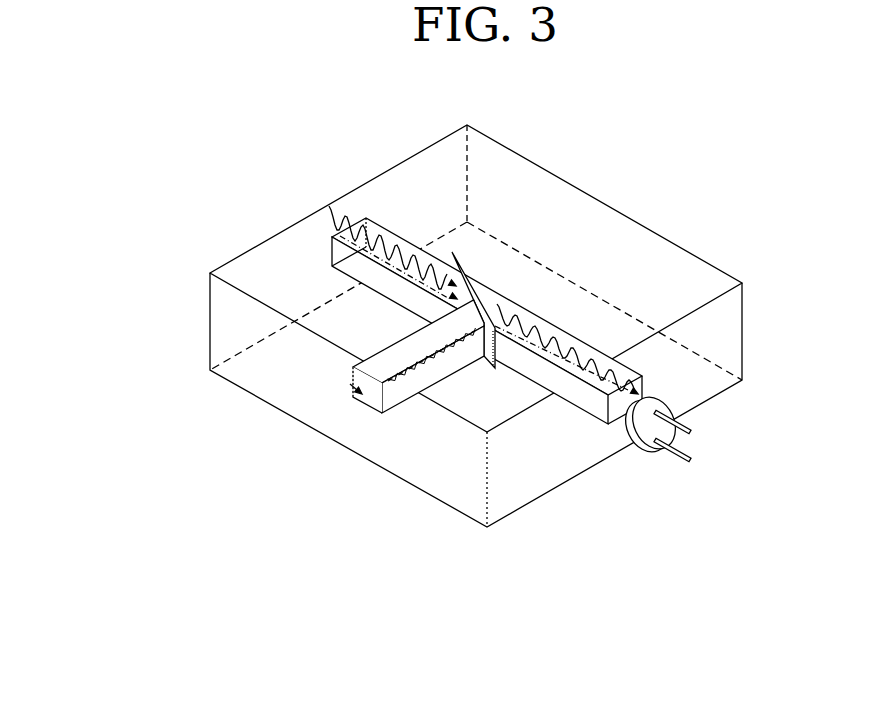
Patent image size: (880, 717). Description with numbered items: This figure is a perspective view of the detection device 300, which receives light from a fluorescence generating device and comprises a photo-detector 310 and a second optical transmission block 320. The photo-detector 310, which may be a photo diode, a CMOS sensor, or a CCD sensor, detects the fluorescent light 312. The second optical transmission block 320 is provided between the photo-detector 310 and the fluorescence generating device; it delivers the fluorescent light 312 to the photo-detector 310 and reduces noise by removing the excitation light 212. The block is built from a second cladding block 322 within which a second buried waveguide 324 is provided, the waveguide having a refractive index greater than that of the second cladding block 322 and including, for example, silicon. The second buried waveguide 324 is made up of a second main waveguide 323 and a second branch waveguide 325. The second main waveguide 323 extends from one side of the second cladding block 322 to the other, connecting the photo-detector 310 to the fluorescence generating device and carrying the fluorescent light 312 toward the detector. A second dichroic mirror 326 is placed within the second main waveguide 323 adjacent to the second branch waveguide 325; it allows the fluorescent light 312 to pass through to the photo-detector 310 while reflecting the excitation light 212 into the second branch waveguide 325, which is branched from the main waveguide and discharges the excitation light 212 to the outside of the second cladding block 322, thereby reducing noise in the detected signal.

The detection device 300 is at (719, 177).
The photo-detector 310 is at (633, 443).
The fluorescent light 312 is at (565, 338).
The second optical transmission block 320 is at (441, 625).
The second cladding block 322 is at (508, 502).
The second main waveguide 323 is at (513, 367).
The second buried waveguide 324 is at (441, 562).
The second branch waveguide 325 is at (422, 380).
The second dichroic mirror 326 is at (457, 298).
The excitation light 212 is at (350, 384).